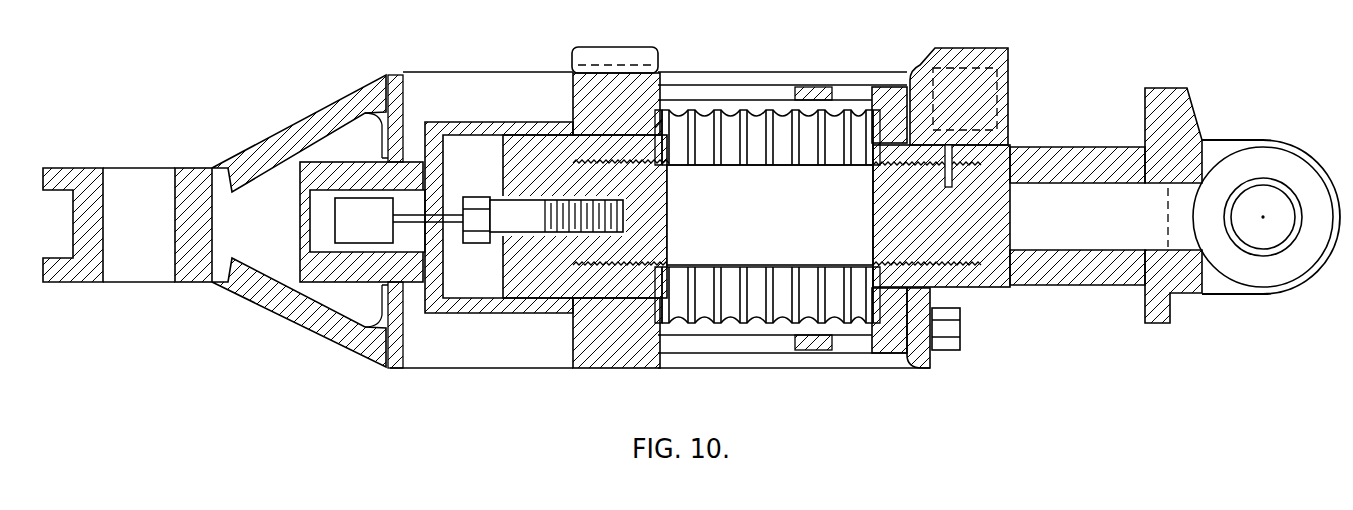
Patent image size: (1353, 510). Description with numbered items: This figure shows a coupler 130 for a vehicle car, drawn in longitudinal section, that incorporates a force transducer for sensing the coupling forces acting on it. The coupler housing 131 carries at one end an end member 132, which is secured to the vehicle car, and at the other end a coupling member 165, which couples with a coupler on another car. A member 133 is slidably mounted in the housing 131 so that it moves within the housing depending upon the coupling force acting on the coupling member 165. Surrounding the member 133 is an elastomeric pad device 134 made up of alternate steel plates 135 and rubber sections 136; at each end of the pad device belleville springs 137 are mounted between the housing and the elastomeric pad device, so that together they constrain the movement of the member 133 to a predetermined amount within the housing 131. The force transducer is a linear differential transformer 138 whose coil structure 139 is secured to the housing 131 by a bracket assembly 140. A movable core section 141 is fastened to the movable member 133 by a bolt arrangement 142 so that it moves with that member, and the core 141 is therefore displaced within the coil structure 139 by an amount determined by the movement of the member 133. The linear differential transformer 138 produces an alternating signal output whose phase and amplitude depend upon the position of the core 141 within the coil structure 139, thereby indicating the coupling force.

The coupler 130 is at (977, 393).
The coupler housing 131 is at (510, 368).
The end member 132 is at (95, 168).
The member 133 is at (1038, 280).
The elastomeric pad device 134 is at (767, 168).
The steel plates 135 is at (708, 110).
The rubber sections 136 is at (723, 122).
The belleville springs 137 is at (660, 120).
The linear differential transformer 138 is at (380, 155).
The coil structure 139 is at (338, 270).
The bracket assembly 140 is at (450, 127).
The movable core section 141 is at (343, 215).
The bolt arrangement 142 is at (473, 197).
The coupling member 165 is at (1300, 148).